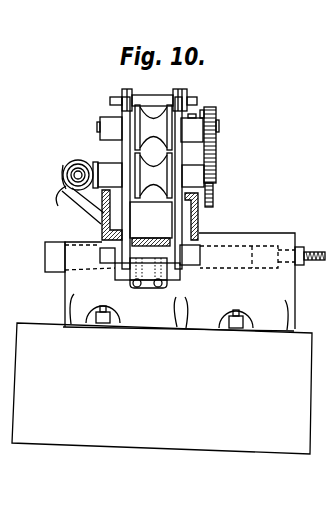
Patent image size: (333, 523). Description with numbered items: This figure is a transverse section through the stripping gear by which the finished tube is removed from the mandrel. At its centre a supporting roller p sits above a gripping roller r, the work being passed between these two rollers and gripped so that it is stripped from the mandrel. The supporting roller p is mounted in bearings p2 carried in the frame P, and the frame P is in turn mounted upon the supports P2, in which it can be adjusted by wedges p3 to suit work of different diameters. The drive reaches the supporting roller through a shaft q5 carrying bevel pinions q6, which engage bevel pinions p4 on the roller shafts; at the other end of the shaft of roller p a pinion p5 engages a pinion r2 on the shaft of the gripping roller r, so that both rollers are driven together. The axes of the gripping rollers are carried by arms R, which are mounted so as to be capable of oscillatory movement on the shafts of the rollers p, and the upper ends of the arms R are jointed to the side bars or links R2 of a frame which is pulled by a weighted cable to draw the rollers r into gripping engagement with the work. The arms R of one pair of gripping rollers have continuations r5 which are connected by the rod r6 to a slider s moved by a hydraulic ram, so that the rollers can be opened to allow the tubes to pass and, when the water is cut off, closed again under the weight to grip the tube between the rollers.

The arms R is at (121, 112).
The side bars or links R2 is at (200, 86).
The gripping rollers r is at (153, 127).
The pinions r2 is at (216, 110).
The continuations r5 is at (222, 219).
The rod r6 is at (155, 287).
The supporting rollers p is at (153, 175).
The bearings p2 is at (108, 168).
The wedges p3 is at (50, 252).
The bevel pinions p4 is at (94, 186).
The pinions p5 is at (213, 200).
The frame P is at (151, 220).
The supports P2 is at (195, 281).
The shaft q5 is at (78, 171).
The bevel pinions q6 is at (66, 189).
The slider s is at (141, 284).